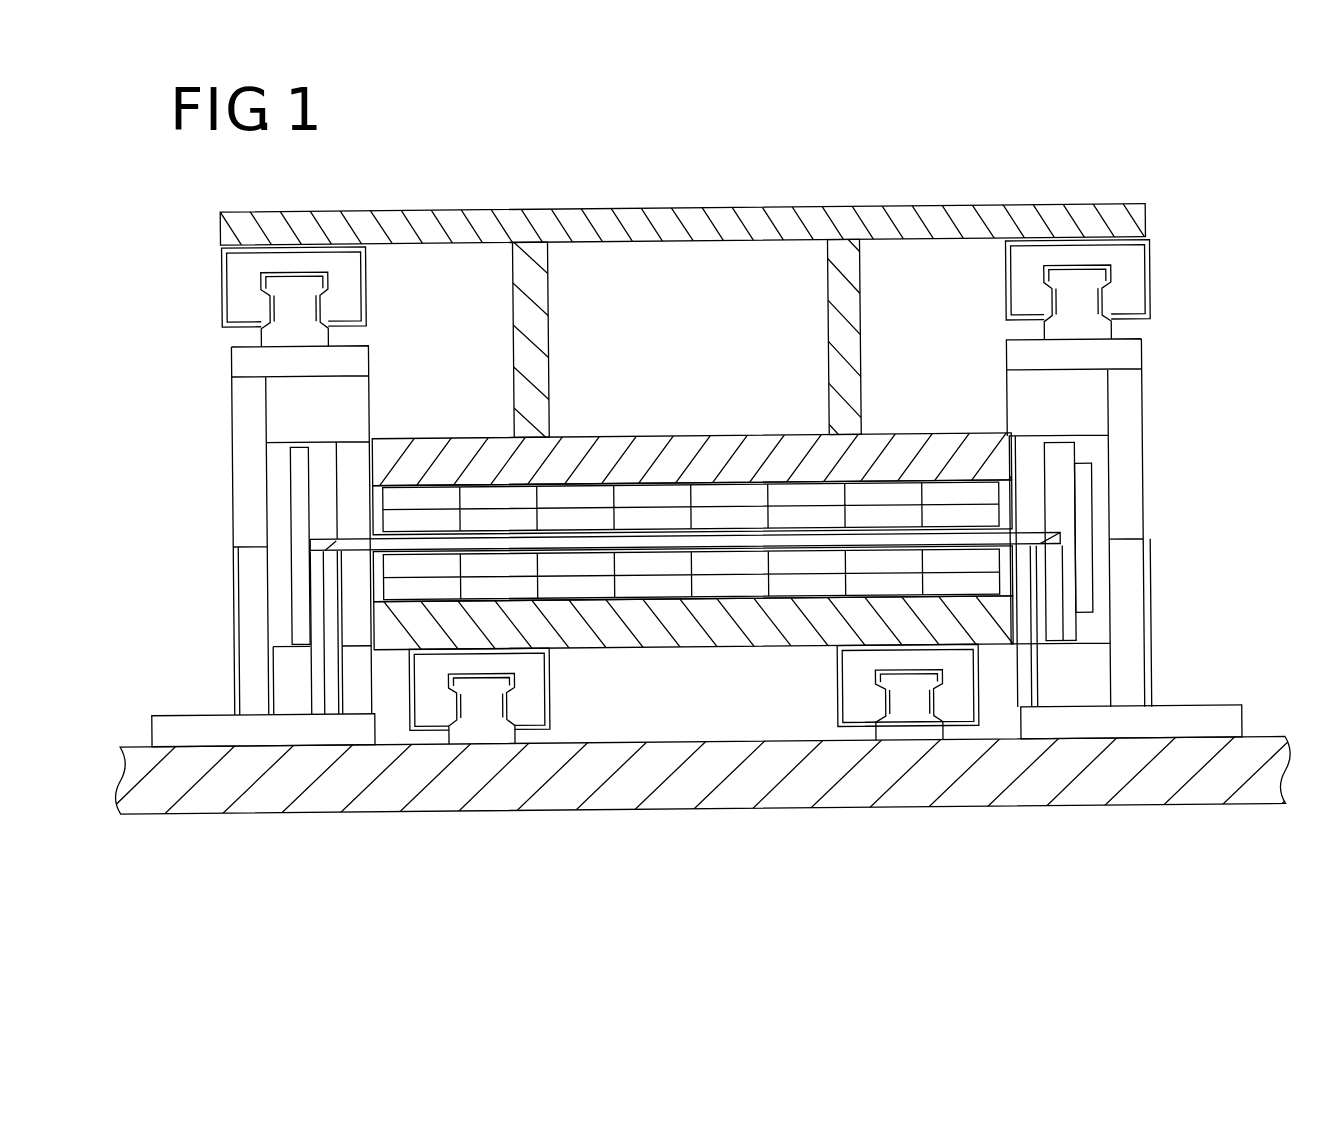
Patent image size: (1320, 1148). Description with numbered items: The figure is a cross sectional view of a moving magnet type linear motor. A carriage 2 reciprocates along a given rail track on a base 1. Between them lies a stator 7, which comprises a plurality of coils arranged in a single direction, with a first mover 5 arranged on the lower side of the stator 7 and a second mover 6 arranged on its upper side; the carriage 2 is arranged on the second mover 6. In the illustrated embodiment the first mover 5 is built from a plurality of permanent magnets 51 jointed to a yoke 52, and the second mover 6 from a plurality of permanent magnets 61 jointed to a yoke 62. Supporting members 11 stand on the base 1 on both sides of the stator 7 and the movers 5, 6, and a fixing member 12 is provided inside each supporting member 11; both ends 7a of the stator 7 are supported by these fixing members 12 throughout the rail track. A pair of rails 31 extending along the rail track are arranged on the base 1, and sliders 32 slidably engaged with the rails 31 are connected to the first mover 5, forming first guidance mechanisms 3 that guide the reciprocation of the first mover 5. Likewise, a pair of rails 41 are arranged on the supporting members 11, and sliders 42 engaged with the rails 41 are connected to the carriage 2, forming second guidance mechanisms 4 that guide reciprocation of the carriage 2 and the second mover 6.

The base 1 is at (716, 800).
The carriage 2 is at (690, 218).
The first guidance mechanism 3 is at (695, 786).
The rail 31 is at (490, 735).
The slider 32 is at (430, 720).
The second guidance mechanism 4 is at (685, 293).
The rail 41 is at (275, 337).
The slider 42 is at (238, 269).
The first mover 5 is at (715, 647).
The permanent magnets 51 is at (745, 590).
The yoke 52 is at (683, 630).
The second mover 6 is at (729, 419).
The permanent magnets 61 is at (633, 495).
The yoke 62 is at (698, 446).
The stator 7 is at (690, 455).
The end of the stator 7a is at (352, 542).
The supporting member 11 is at (245, 461).
The fixing member 12 is at (345, 494).